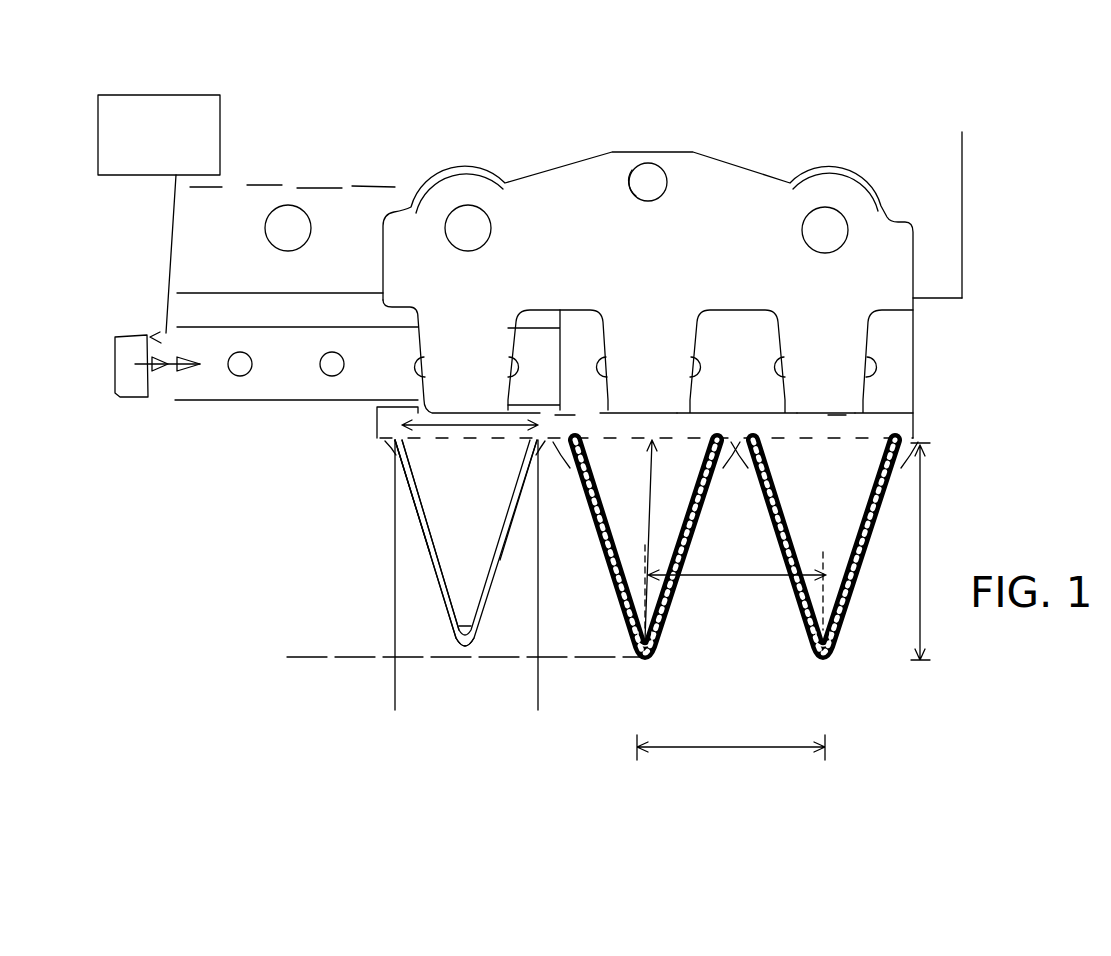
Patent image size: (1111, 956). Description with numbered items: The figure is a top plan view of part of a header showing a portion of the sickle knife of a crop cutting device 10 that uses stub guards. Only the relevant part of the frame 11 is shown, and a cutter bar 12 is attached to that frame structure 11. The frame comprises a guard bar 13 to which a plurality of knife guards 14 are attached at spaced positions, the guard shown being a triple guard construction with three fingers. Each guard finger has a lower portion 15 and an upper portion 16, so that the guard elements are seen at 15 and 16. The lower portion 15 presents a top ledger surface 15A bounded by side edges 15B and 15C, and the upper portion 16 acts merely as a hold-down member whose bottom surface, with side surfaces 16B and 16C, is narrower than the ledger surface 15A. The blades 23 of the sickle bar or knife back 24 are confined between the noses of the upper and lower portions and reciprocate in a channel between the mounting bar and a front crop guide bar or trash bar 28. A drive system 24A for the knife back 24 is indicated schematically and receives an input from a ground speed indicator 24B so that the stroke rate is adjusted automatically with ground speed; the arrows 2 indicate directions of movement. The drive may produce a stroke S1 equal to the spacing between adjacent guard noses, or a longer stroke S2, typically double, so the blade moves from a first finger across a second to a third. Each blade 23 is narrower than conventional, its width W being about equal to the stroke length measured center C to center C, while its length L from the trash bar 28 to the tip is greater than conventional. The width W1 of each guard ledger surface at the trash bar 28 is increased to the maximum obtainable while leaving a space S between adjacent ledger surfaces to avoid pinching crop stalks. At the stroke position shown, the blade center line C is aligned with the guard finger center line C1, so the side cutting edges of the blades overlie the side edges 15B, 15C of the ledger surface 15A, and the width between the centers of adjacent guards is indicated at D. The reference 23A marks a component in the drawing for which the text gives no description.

The crop cutting device 10 is at (978, 374).
The frame 11 is at (960, 194).
The cutter bar 12 is at (943, 240).
The guard bar 13 is at (225, 222).
The knife guard 14 is at (741, 200).
The lower portion 15 is at (442, 649).
The ledger surface 15A is at (467, 587).
The side edge of ledger surface 15B is at (432, 573).
The side edge of ledger surface 15C is at (502, 593).
The upper portion 16 is at (855, 597).
The side surface of upper portion 16B is at (424, 503).
The side surface of upper portion 16C is at (507, 518).
The direction arrow 2 is at (687, 124).
The blade 23 is at (640, 530).
The tine holder 23A is at (569, 332).
The knife back 24 is at (357, 352).
The drive system 24A is at (147, 335).
The ground speed indicator 24B is at (176, 95).
The trash bar 28 is at (915, 428).
The width of guard ledger surface at trash bar W1 is at (440, 422).
The space at trash bar S is at (588, 468).
The blade length L is at (650, 512).
The center line of knife blade C is at (823, 555).
The blade width W is at (727, 580).
The width between guard centers D is at (738, 727).
The center line of guard finger C1 is at (462, 650).
The stroke S1 is at (812, 836).
The stroke S2 is at (448, 844).